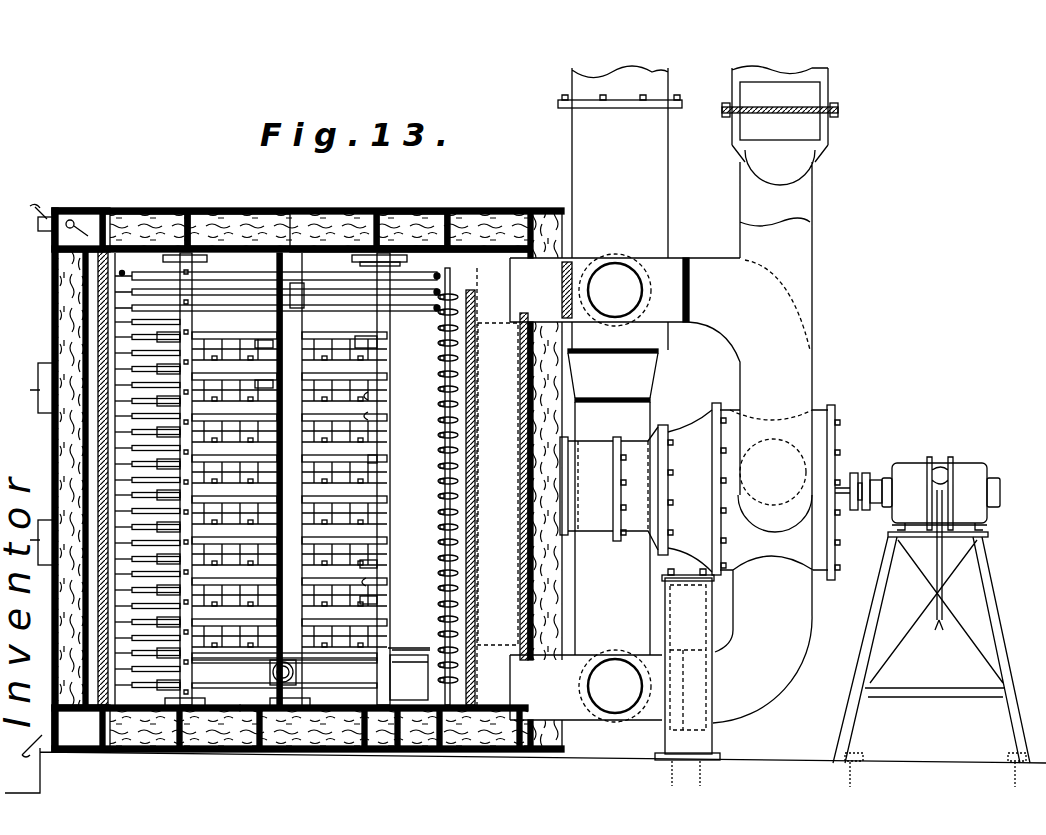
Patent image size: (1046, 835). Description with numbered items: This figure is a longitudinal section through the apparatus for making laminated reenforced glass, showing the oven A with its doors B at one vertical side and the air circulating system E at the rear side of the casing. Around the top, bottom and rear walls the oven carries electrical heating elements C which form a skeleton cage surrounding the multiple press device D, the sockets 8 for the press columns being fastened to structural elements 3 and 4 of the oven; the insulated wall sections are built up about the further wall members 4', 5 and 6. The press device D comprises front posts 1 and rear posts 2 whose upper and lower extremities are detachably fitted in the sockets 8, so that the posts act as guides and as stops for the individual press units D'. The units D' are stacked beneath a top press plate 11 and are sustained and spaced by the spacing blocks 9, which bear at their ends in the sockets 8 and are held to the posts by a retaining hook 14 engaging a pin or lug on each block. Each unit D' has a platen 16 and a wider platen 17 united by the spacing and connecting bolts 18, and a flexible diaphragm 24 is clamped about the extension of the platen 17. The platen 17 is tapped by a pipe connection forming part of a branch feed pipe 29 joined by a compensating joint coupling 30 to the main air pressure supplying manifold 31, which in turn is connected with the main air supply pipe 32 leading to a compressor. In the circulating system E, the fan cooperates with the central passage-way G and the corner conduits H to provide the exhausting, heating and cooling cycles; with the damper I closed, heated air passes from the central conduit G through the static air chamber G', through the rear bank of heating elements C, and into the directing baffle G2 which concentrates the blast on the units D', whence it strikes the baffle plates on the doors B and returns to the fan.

The oven A is at (265, 206).
The doors B is at (43, 303).
The electrical heating elements C is at (430, 312).
The press device D is at (302, 499).
The press units D' is at (305, 533).
The air circulating system E is at (632, 208).
The central passage-way G is at (700, 491).
The static air chamber G' is at (503, 486).
The directing baffle G2 is at (439, 486).
The corner conduits H is at (613, 502).
The damper I is at (816, 105).
The front posts 1 is at (254, 265).
The rear posts 2 is at (395, 265).
The structural element 3 is at (360, 741).
The structural element 4 is at (161, 215).
The insulation block 4' is at (409, 215).
The wall stud 5 is at (400, 745).
The inner sheathing 6 is at (260, 718).
The sockets or footing plates 8 is at (171, 715).
The spacing blocks 9 is at (373, 420).
The top press plate 11 is at (382, 342).
The retaining hook 14 is at (380, 460).
The platen 16 is at (370, 584).
The platen 17 is at (368, 602).
The spacing and connecting bolts 18 is at (373, 628).
The flexible diaphragm 24 is at (368, 566).
The branch feed pipe 29 is at (267, 346).
The compensating joint coupling 30 is at (270, 381).
The main air pressure supplying manifold 31 is at (302, 300).
The main air supply pipe 32 is at (298, 663).